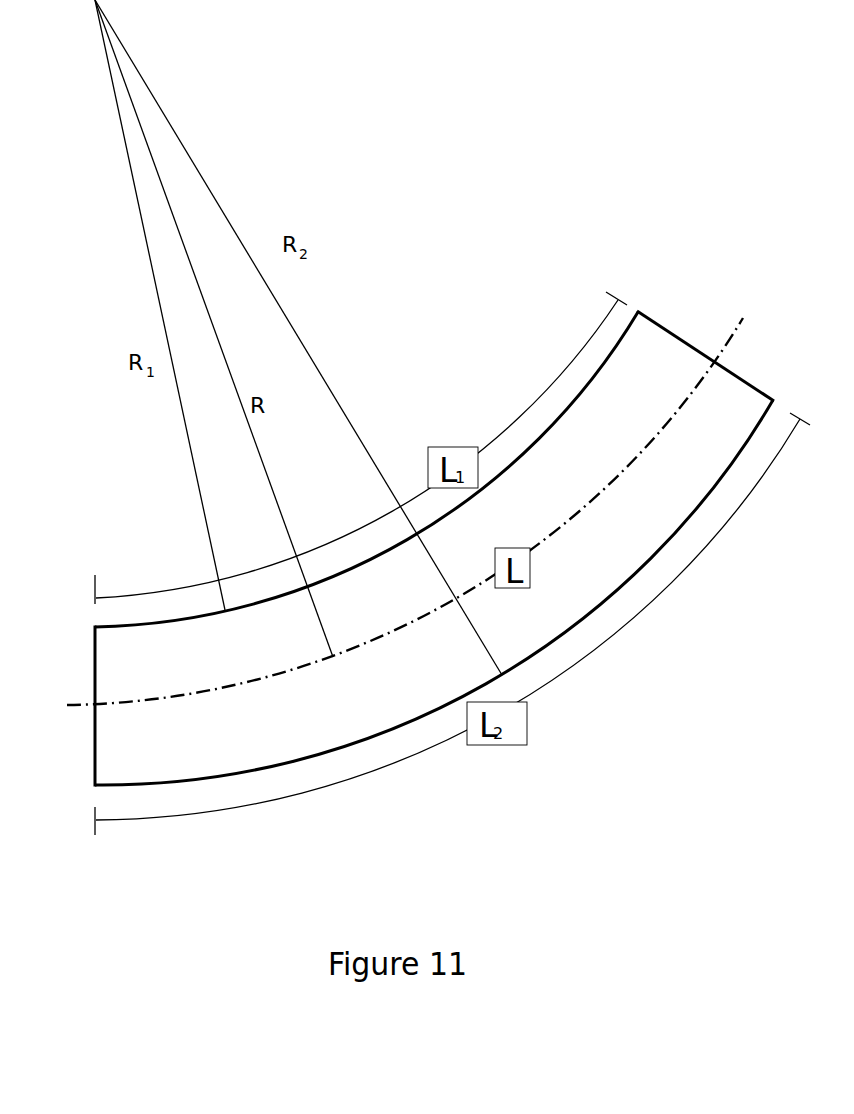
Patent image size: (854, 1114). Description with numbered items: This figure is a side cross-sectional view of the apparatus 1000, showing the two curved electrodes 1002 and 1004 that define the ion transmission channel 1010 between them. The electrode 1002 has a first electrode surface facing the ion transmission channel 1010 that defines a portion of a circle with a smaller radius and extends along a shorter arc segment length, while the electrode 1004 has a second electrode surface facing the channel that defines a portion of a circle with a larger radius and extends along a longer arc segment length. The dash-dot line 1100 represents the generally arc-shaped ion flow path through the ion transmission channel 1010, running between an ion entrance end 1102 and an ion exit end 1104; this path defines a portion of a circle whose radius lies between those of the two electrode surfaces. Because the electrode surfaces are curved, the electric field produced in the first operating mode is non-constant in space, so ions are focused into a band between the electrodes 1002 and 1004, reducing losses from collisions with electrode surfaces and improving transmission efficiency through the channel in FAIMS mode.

The apparatus 1000 is at (121, 545).
The electrode 1002 is at (525, 453).
The electrode 1004 is at (580, 623).
The ion transmission channel 1010 is at (277, 733).
The dash-dot line 1100 is at (633, 452).
The ion entrance end 1102 is at (93, 755).
The ion exit end 1104 is at (683, 341).